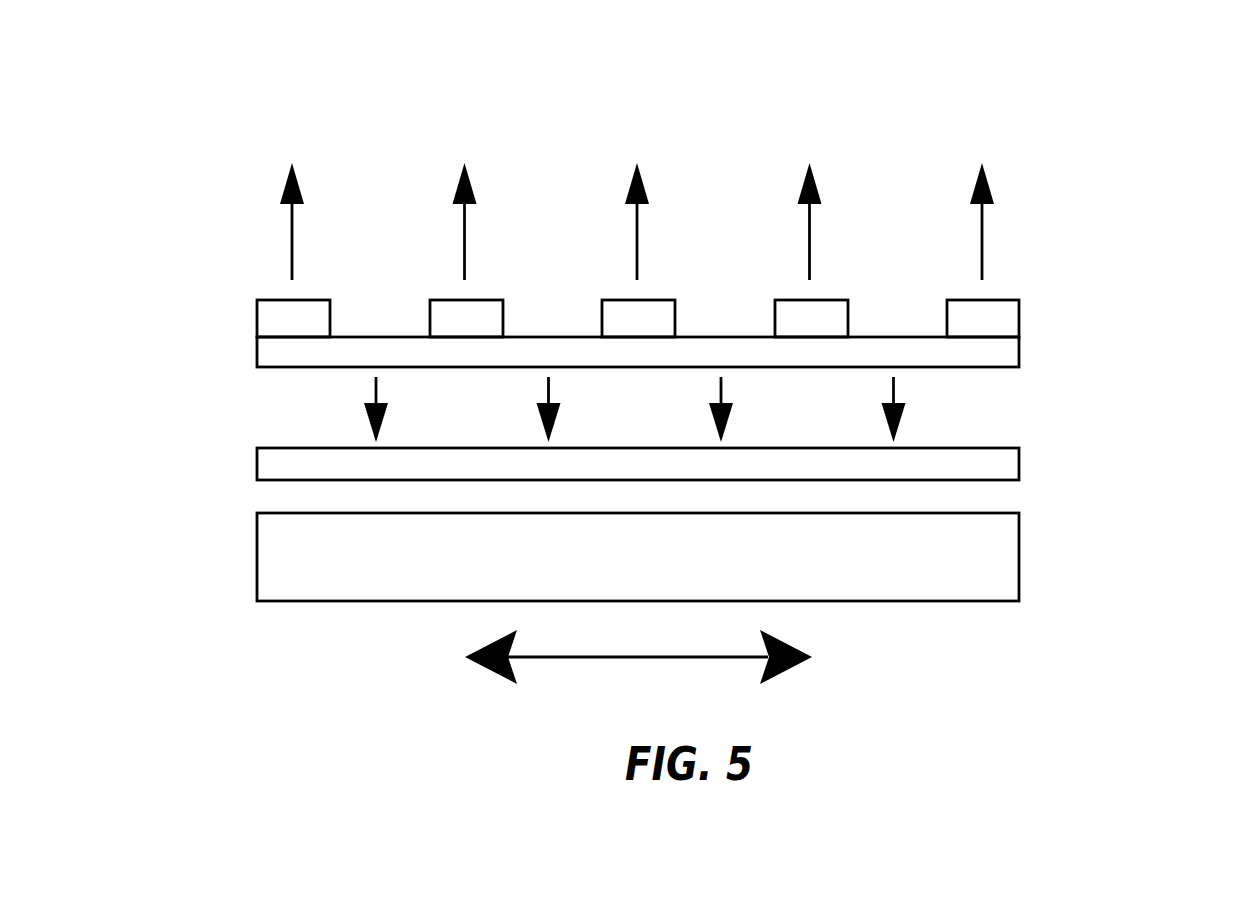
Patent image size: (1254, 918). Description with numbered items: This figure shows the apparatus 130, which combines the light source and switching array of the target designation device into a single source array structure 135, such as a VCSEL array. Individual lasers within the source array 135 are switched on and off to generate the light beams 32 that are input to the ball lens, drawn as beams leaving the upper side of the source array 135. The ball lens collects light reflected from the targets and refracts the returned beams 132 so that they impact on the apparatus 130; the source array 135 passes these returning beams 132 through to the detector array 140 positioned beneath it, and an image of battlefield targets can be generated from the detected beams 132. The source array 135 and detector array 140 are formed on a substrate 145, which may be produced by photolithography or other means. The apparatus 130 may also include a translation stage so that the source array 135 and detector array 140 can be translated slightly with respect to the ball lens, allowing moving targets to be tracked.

The apparatus 130 is at (362, 76).
The light beams 32 is at (637, 208).
The source array structure 135 is at (257, 318).
The returned beams 132 is at (614, 410).
The detector array 140 is at (257, 463).
The substrate 145 is at (257, 560).